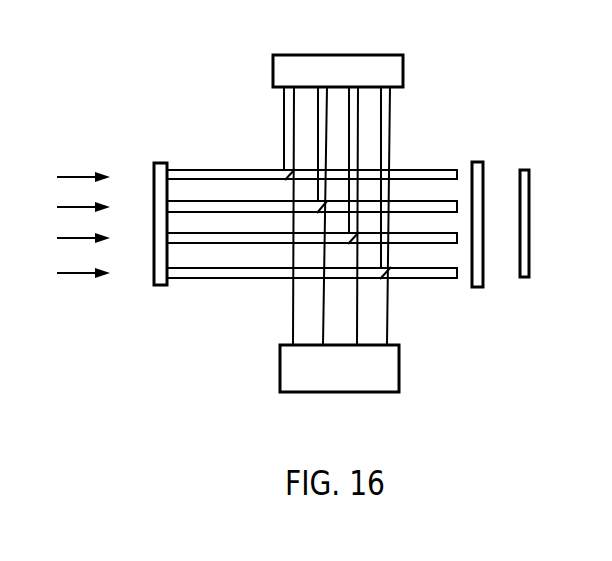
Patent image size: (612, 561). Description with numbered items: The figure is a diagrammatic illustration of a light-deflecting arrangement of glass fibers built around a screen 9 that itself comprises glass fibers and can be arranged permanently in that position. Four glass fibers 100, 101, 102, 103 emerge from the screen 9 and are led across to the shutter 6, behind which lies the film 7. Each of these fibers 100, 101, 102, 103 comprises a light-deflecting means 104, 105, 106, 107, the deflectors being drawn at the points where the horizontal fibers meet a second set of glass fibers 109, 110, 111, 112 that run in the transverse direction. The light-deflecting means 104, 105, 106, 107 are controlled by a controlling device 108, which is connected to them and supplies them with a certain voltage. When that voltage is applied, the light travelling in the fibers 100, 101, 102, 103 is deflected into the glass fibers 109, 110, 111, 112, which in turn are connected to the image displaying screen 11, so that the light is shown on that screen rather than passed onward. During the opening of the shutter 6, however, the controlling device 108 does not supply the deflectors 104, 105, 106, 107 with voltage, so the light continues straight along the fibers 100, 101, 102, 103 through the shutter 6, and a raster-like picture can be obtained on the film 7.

The shutter 6 is at (478, 205).
The film 7 is at (530, 181).
The screen 9 is at (153, 178).
The image displaying screen 11 is at (321, 58).
The glass fiber 100 is at (189, 175).
The glass fiber 101 is at (230, 207).
The glass fiber 102 is at (192, 238).
The glass fiber 103 is at (243, 272).
The light-deflecting means 104 is at (291, 177).
The light-deflecting means 105 is at (314, 214).
The light-deflecting means 106 is at (360, 241).
The light-deflecting means 107 is at (389, 279).
The controlling device 108 is at (333, 384).
The glass fiber 109 is at (285, 99).
The glass fiber 110 is at (320, 119).
The glass fiber 111 is at (350, 103).
The glass fiber 112 is at (384, 131).